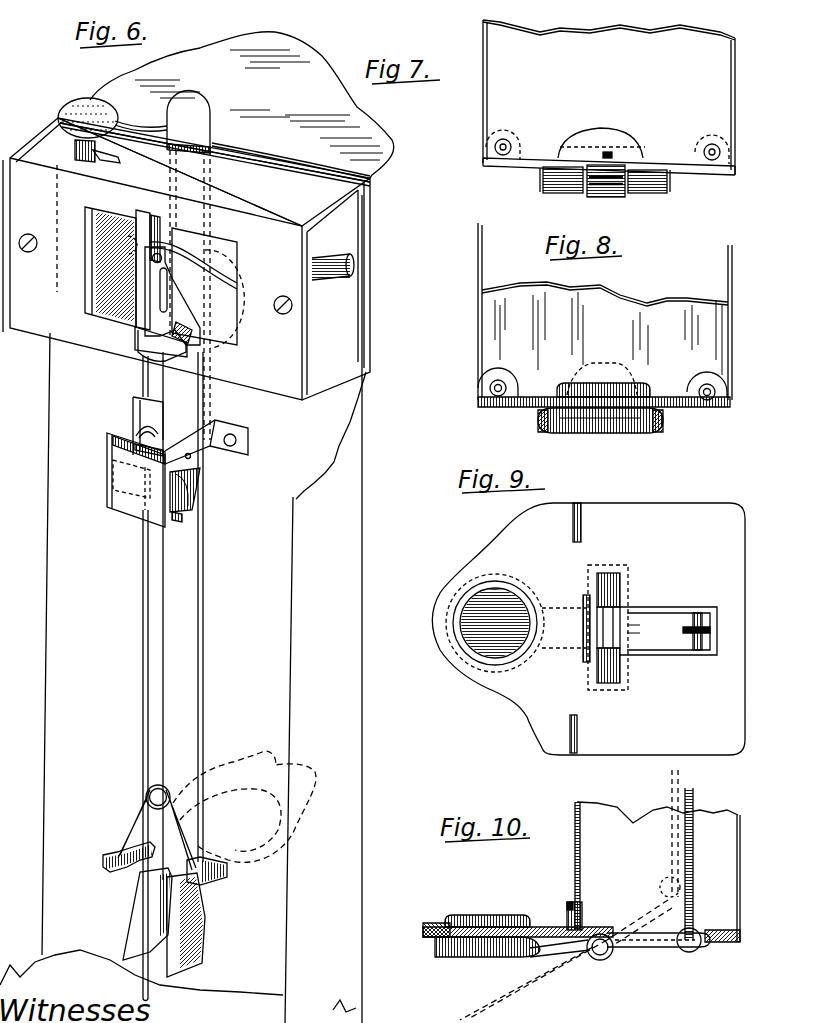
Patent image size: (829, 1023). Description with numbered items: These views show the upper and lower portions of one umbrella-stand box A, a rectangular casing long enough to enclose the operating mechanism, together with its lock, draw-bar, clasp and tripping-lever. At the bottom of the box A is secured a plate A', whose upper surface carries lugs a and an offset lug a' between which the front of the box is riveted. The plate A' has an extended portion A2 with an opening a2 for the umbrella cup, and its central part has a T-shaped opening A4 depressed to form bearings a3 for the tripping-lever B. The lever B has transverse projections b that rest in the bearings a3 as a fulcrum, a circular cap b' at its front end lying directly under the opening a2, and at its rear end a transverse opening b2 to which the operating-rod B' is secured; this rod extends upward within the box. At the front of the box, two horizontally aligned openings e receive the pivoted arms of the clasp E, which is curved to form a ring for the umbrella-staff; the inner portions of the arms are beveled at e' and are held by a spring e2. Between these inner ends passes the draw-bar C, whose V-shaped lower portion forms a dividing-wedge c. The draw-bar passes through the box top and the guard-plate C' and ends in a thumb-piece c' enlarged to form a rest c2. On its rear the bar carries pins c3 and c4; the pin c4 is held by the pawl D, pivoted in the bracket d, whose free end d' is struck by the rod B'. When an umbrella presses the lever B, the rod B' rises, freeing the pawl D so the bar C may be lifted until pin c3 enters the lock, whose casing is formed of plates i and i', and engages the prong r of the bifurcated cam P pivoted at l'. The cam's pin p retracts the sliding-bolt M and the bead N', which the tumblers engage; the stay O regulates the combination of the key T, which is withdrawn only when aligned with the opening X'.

In FIG. 6, the box A is at (204, 609).
In FIG. 7, the box A is at (609, 97).
In FIG. 8, the box A is at (605, 311).
In FIG. 10, the box A is at (657, 872).
In FIG. 7, the bottom plate A' is at (609, 189).
In FIG. 9, the bottom plate A' is at (589, 629).
In FIG. 10, the bottom plate A' is at (583, 954).
In FIG. 8, the extended portion A2 is at (520, 407).
In FIG. 9, the extended portion A2 is at (483, 637).
In FIG. 10, the extended portion A2 is at (430, 923).
In FIG. 9, the T-shaped opening A4 is at (666, 610).
In FIG. 7, the lugs a is at (607, 141).
In FIG. 8, the lugs a is at (602, 381).
In FIG. 9, the lugs a is at (590, 628).
In FIG. 10, the lugs a is at (562, 902).
In FIG. 7, the lug a' is at (610, 175).
In FIG. 8, the lug a' is at (599, 371).
In FIG. 9, the lug a' is at (574, 621).
In FIG. 10, the lug a' is at (591, 910).
In FIG. 8, the opening a2 is at (602, 378).
In FIG. 9, the opening a2 is at (462, 585).
In FIG. 10, the opening a2 is at (483, 915).
In FIG. 7, the bearings a3 is at (547, 187).
In FIG. 8, the bearings a3 is at (542, 432).
In FIG. 9, the bearings a3 is at (618, 590).
In FIG. 10, the bearings a3 is at (606, 958).
In FIG. 7, the tripping-lever B is at (606, 193).
In FIG. 9, the tripping-lever B is at (639, 630).
In FIG. 10, the tripping-lever B is at (658, 876).
In FIG. 6, the operating-rod B' is at (124, 680).
In FIG. 7, the transverse projections b is at (646, 196).
In FIG. 9, the transverse projections b is at (623, 615).
In FIG. 10, the transverse projections b is at (566, 960).
In FIG. 7, the circular cap b' is at (563, 195).
In FIG. 8, the circular cap b' is at (600, 432).
In FIG. 9, the circular cap b' is at (549, 653).
In FIG. 10, the circular cap b' is at (487, 961).
In FIG. 9, the transverse opening b2 is at (693, 650).
In FIG. 10, the transverse opening b2 is at (700, 930).
In FIG. 6, the draw-bar C is at (183, 616).
In FIG. 6, the guard-plate C' is at (242, 105).
In FIG. 6, the dividing-wedge c is at (180, 925).
In FIG. 6, the thumb-piece c' is at (188, 122).
In FIG. 6, the rest c2 is at (174, 150).
In FIG. 6, the pin c3 is at (192, 340).
In FIG. 6, the pin c4 is at (174, 518).
In FIG. 6, the pawl D is at (188, 498).
In FIG. 6, the bracket d is at (177, 473).
In FIG. 6, the free end of the pawl d' is at (123, 426).
In FIG. 6, the clasp E is at (283, 812).
In FIG. 6, the openings e is at (167, 847).
In FIG. 6, the beveled inner portions e' is at (139, 914).
In FIG. 6, the spring e2 is at (163, 787).
In FIG. 6, the lock plate i is at (215, 153).
In FIG. 6, the lock plate i' is at (180, 172).
In FIG. 6, the cam pivot l' is at (136, 270).
In FIG. 6, the sliding-bolt M is at (221, 243).
In FIG. 6, the rib or bead N' is at (119, 256).
In FIG. 6, the stay O is at (110, 267).
In FIG. 6, the bifurcated cam P is at (224, 299).
In FIG. 6, the pin p is at (127, 245).
In FIG. 6, the prong r is at (172, 296).
In FIG. 6, the key T is at (66, 112).
In FIG. 6, the opening X' is at (106, 163).